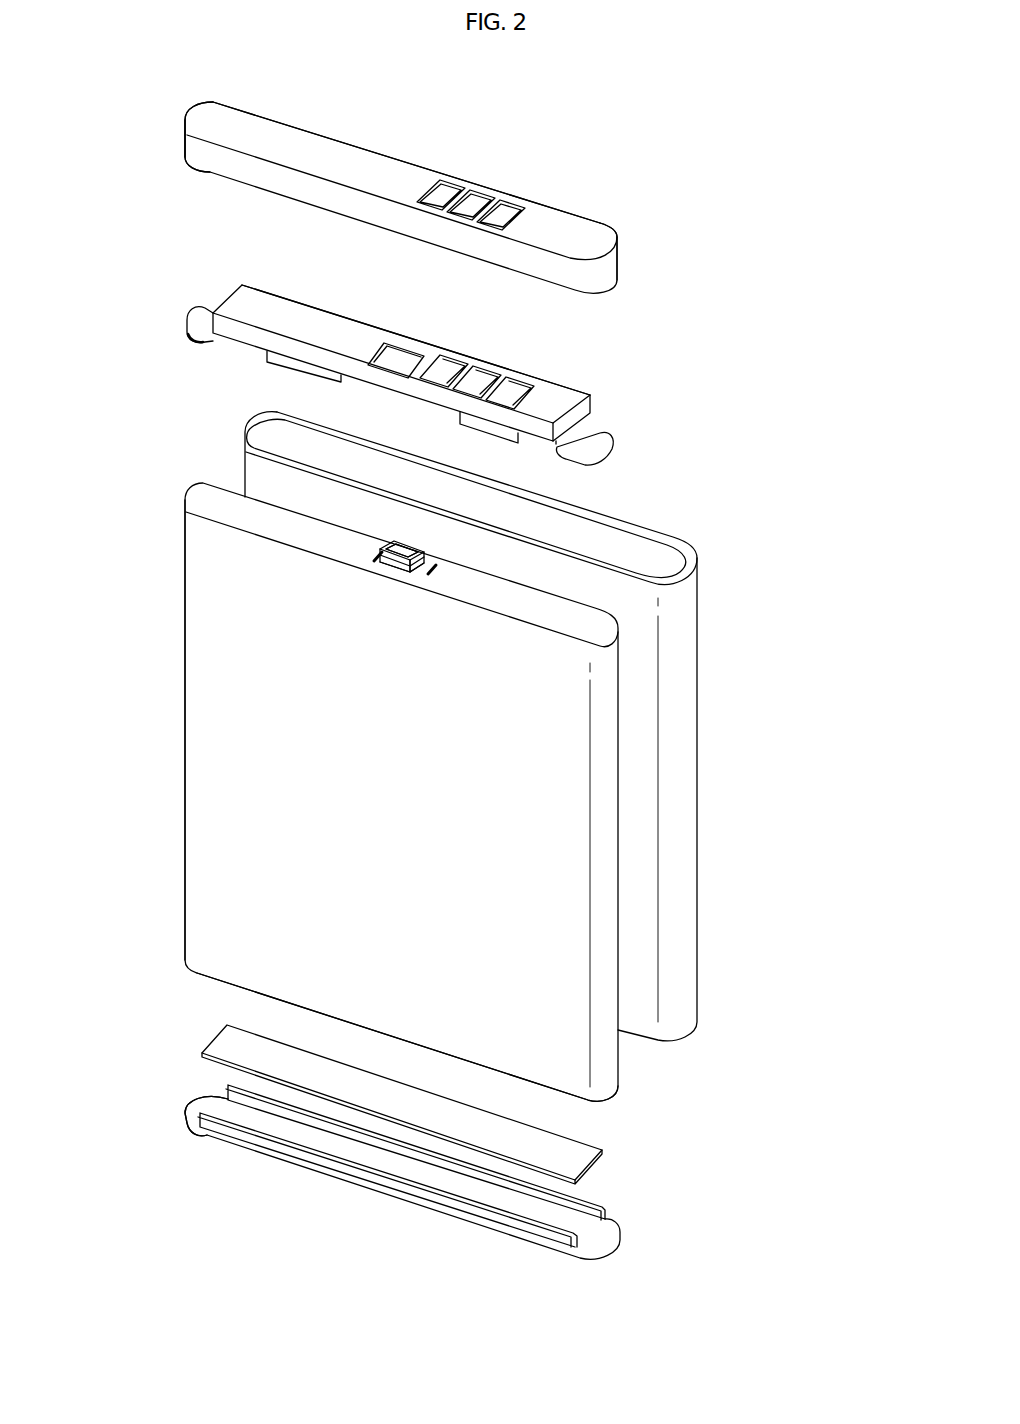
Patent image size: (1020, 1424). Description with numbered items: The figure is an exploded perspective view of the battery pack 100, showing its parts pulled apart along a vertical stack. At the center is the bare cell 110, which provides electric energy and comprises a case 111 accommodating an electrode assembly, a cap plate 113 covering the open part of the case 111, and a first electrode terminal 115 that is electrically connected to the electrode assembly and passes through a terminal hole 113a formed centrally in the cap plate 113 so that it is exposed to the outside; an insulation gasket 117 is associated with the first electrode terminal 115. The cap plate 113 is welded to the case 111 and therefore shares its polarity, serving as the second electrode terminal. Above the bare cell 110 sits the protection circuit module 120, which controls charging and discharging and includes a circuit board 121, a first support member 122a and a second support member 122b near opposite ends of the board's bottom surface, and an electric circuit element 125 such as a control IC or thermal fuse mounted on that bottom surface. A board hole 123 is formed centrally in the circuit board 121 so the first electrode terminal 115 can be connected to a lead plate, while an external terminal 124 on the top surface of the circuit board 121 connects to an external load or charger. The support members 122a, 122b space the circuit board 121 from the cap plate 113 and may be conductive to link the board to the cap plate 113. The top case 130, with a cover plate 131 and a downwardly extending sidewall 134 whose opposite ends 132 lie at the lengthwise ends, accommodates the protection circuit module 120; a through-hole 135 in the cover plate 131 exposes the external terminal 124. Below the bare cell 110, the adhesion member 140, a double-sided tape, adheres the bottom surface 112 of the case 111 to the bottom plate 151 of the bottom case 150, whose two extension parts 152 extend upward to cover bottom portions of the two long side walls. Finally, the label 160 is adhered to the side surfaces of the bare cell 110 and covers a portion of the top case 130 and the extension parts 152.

The battery pack 100 is at (700, 93).
The bare cell 110 is at (173, 785).
The case 111 is at (192, 653).
The bottom surface 112 is at (605, 1102).
The cap plate 113 is at (376, 547).
The terminal hole 113a is at (394, 567).
The first electrode terminal 115 is at (410, 565).
The insulation gasket 117 is at (375, 563).
The protection circuit module 120 is at (608, 400).
The circuit board 121 is at (240, 285).
The first support member 122a is at (595, 449).
The second support member 122b is at (188, 320).
The board hole 123 is at (405, 354).
The external terminal 124 is at (487, 370).
The electric circuit element 125 is at (460, 417).
The top case 130 is at (594, 204).
The cover plate 131 is at (330, 148).
The opposite ends 132 is at (184, 133).
The sidewall 134 is at (202, 150).
The through-hole 135 is at (452, 189).
The adhesion member 140 is at (582, 1160).
The bottom case 150 is at (607, 1243).
The bottom plate 151 is at (196, 1098).
The extension parts 152 is at (307, 1118).
The label 160 is at (690, 704).